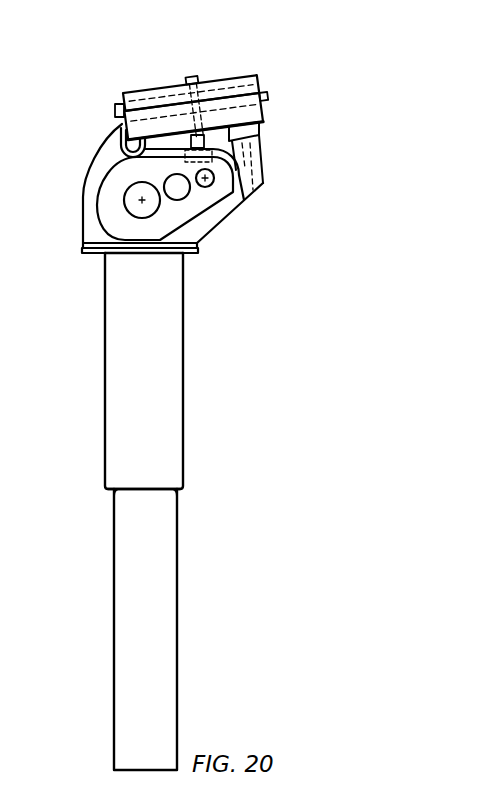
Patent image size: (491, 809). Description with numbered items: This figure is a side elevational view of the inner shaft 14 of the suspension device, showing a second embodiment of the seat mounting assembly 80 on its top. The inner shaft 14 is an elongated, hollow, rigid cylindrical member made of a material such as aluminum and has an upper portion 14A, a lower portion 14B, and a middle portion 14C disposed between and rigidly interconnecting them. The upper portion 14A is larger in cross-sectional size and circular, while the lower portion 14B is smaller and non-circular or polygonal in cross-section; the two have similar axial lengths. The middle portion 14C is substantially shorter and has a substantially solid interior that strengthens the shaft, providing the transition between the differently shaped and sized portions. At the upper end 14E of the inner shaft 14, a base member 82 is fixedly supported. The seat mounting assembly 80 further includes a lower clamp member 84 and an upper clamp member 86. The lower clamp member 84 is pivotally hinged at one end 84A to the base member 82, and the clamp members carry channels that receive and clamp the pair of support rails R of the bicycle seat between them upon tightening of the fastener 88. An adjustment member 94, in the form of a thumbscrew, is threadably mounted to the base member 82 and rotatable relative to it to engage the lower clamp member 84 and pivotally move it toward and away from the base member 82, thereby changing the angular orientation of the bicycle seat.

The inner shaft 14 is at (153, 511).
The upper portion 14A is at (181, 315).
The lower portion 14B is at (174, 668).
The middle portion 14C is at (176, 490).
The upper end 14E is at (120, 257).
The seat mounting assembly 80 is at (80, 128).
The base member 82 is at (217, 225).
The lower clamp member 84 is at (147, 130).
The end of lower clamp member 84A is at (120, 153).
The upper clamp member 86 is at (238, 83).
The fastener 88 is at (192, 76).
The adjustment member 94 is at (245, 133).
The support rails R is at (119, 104).